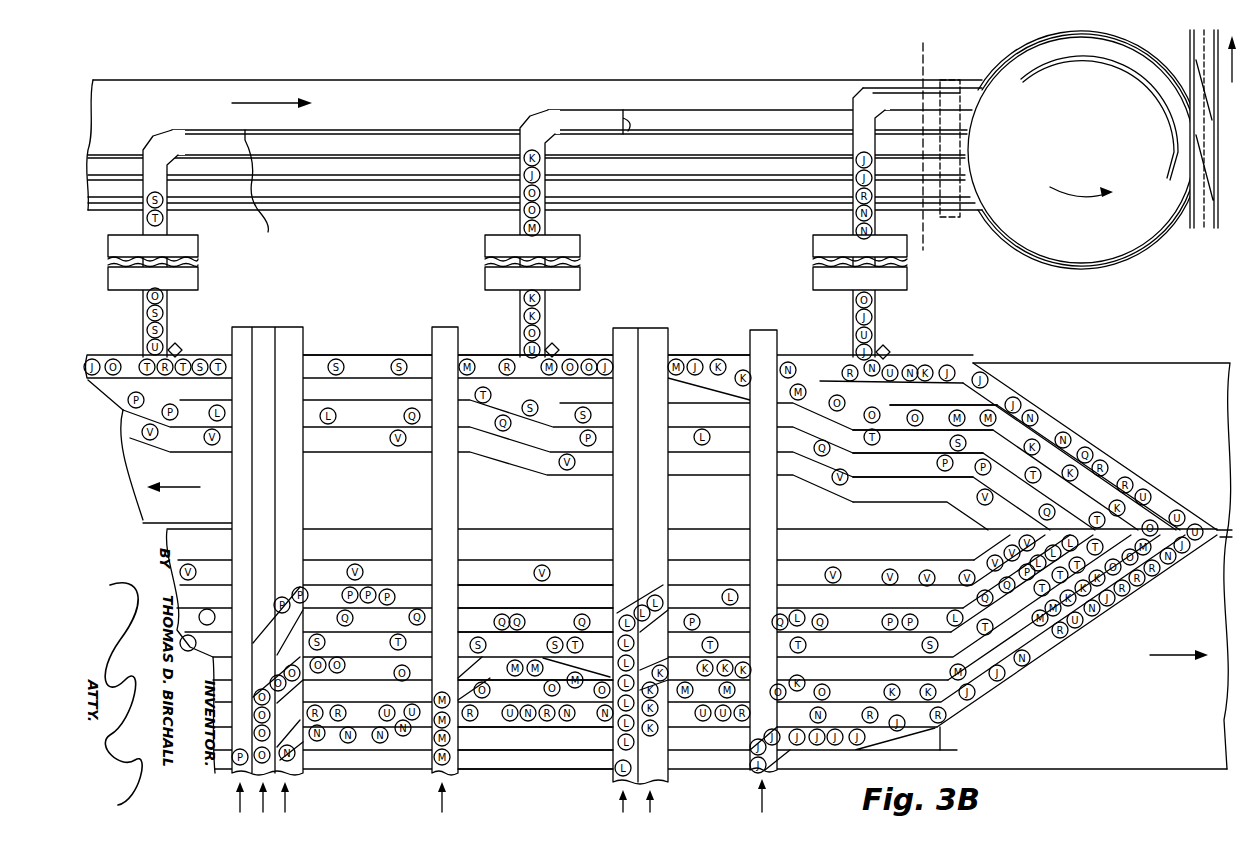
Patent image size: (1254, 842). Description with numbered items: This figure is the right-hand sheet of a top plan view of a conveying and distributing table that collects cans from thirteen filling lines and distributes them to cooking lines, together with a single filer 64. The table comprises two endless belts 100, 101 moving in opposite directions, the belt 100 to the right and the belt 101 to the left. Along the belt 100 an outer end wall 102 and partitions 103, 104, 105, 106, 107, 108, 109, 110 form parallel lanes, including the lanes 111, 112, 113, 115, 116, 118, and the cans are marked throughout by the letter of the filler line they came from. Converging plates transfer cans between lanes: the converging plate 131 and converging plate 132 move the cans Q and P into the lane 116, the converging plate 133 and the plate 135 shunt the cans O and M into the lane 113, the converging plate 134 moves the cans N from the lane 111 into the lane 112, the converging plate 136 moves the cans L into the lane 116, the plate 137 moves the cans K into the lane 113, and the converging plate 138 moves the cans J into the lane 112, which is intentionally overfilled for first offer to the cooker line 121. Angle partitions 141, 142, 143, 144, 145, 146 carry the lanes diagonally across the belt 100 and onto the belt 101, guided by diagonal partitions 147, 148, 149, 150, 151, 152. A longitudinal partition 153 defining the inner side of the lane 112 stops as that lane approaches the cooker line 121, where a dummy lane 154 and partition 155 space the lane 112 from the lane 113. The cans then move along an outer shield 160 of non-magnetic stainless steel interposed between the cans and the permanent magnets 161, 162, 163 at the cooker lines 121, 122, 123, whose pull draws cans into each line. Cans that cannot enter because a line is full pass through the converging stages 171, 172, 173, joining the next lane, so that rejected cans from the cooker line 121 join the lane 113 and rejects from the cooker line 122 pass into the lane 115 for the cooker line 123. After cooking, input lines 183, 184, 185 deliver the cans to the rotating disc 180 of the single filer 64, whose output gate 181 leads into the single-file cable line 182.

The single filer 64 is at (1007, 246).
The belt 100 is at (1165, 769).
The belt 101 is at (1180, 371).
The outer end wall 102 is at (503, 768).
The partition 103 is at (554, 731).
The partition 104 is at (488, 731).
The partition 105 is at (501, 684).
The partition 106 is at (202, 644).
The partition 107 is at (508, 641).
The partition 108 is at (535, 616).
The partition 109 is at (561, 593).
The partition 110 is at (567, 565).
The lane 111 is at (476, 766).
The lane 112 is at (970, 363).
The lane 113 is at (865, 697).
The lane 115 is at (872, 650).
The lane 116 is at (872, 626).
The lane 118 is at (511, 579).
The cooker line 121 is at (853, 230).
The cooker line 122 is at (548, 224).
The cooker line 123 is at (168, 224).
The converging plate 131 is at (188, 605).
The converging plate 132 is at (412, 598).
The converging plate 133 is at (392, 661).
The converging plate 134 is at (418, 749).
The plate 135 is at (570, 665).
The converging plate 136 is at (783, 599).
The plate 137 is at (782, 677).
The converging plate 138 is at (904, 737).
The angle partition 141 is at (1052, 655).
The angle partition 142 is at (967, 710).
The angle partition 143 is at (928, 677).
The angle partition 144 is at (1017, 594).
The angle partition 145 is at (952, 607).
The angle partition 146 is at (980, 562).
The diagonal partition 147 is at (1020, 397).
The diagonal partition 148 is at (1160, 501).
The diagonal partition 149 is at (1101, 506).
The diagonal partition 150 is at (1030, 496).
The diagonal partition 151 is at (1000, 519).
The diagonal partition 152 is at (975, 517).
The longitudinal partition 153 is at (960, 391).
The dummy lane 154 is at (996, 385).
The partition 155 is at (905, 405).
The outer shield 160 is at (906, 357).
The permanent magnet 161 is at (890, 349).
The permanent magnet 162 is at (558, 352).
The permanent magnet 163 is at (176, 347).
The converging stage 171 is at (822, 363).
The converging stage 172 is at (488, 360).
The converging stage 173 is at (122, 399).
The rotating disc 180 is at (1083, 255).
The output gate 181 is at (1170, 160).
The single-file cable line 182 is at (1192, 56).
The input line 183 is at (903, 95).
The input line 184 is at (628, 131).
The input line 185 is at (270, 186).